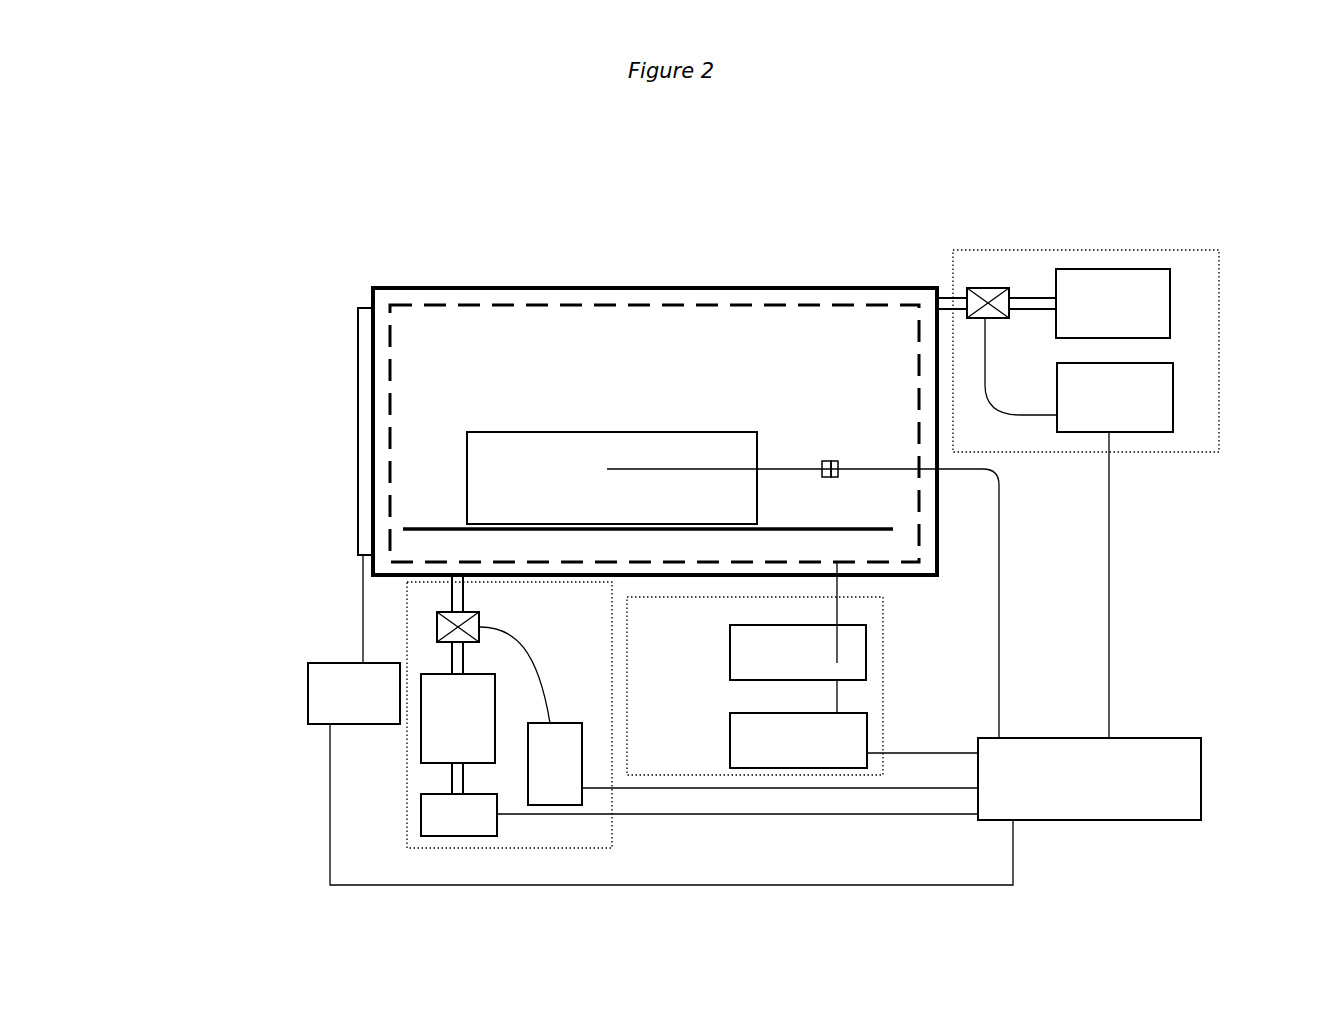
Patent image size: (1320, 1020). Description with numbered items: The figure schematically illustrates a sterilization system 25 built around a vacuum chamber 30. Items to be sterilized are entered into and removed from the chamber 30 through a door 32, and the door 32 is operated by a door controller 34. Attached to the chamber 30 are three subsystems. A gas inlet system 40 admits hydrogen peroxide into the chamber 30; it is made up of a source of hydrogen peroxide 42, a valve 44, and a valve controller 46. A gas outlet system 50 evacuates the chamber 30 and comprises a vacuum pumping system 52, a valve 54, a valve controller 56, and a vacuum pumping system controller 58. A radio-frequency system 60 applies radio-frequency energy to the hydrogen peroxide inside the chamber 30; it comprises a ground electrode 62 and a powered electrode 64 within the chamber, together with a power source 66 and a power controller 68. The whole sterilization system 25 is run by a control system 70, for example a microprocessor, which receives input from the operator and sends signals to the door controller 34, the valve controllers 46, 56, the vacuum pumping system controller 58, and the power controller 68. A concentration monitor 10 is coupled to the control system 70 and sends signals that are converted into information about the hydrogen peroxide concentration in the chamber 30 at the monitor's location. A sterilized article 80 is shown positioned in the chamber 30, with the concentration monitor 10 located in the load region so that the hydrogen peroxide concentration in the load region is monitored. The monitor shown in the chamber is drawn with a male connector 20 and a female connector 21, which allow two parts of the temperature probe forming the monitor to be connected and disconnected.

The concentration monitor 10 is at (703, 462).
The male connector 20 is at (824, 455).
The female connector 21 is at (838, 455).
The sterilization system 25 is at (329, 228).
The vacuum chamber 30 is at (518, 286).
The door 32 is at (352, 393).
The door controller 34 is at (302, 693).
The gas inlet system 40 is at (1234, 482).
The source of hydrogen peroxide 42 is at (1168, 262).
The valve 44 is at (995, 280).
The valve controller 46 is at (1173, 410).
The gas outlet system 50 is at (640, 848).
The vacuum pumping system 52 is at (418, 746).
The valve 54 is at (477, 595).
The valve controller 56 is at (573, 717).
The vacuum pumping system controller 58 is at (421, 820).
The radio-frequency system 60 is at (915, 655).
The ground electrode 62 is at (701, 286).
The powered electrode 64 is at (590, 303).
The power source 66 is at (715, 655).
The power controller 68 is at (720, 745).
The control system 70 is at (1076, 836).
The sterilized article 80 is at (466, 426).